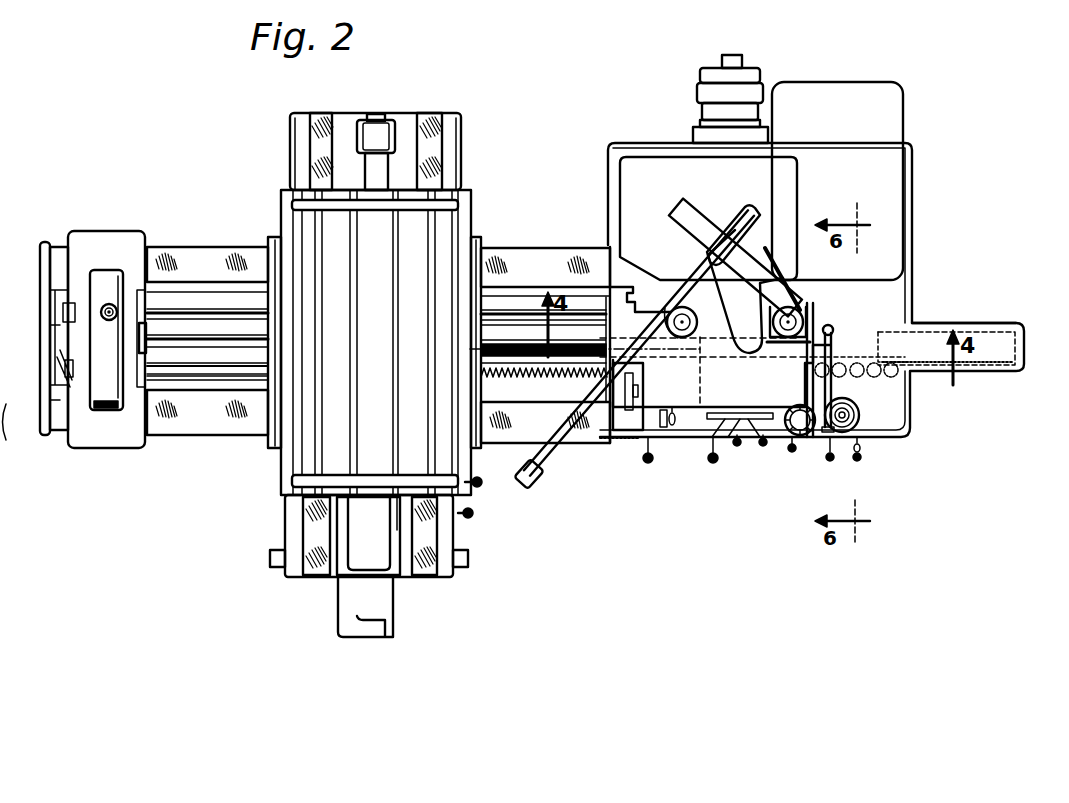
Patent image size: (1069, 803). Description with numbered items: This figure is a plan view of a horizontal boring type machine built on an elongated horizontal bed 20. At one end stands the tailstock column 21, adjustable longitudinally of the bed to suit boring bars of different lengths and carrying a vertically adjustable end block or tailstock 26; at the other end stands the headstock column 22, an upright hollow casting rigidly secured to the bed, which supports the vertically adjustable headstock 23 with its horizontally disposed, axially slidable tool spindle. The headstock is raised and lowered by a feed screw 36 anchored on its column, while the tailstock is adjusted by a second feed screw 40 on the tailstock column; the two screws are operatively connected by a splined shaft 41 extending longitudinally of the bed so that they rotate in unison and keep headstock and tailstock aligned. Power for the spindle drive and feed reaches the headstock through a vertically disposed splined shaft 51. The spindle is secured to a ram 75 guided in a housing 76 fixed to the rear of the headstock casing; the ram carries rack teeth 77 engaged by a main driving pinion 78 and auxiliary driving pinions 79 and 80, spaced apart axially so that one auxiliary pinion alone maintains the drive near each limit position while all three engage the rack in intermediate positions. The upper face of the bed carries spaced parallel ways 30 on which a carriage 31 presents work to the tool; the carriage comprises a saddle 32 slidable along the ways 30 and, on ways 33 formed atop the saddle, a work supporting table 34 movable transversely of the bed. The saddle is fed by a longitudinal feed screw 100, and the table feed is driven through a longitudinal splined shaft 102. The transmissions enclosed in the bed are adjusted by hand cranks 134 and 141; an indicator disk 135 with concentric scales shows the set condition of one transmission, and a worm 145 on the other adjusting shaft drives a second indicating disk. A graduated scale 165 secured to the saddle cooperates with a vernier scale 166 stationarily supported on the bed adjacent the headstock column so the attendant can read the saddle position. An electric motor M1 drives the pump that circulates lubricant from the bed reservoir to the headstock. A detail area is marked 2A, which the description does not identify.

The bed 20 is at (908, 420).
The tailstock column 21 is at (128, 237).
The headstock column 22 is at (612, 179).
The headstock 23 is at (822, 309).
The tailstock 26 is at (152, 327).
The ways 30 is at (207, 252).
The carriage 31 is at (274, 164).
The saddle 32 is at (276, 534).
The ways 33 is at (323, 117).
The work supporting table 34 is at (281, 212).
The feed screw 36 is at (677, 332).
The feed screw 40 is at (109, 304).
The shaft 41 is at (250, 312).
The splined shaft 51 is at (797, 308).
The ram 75 is at (978, 335).
The housing 76 is at (955, 328).
The rack teeth 77 is at (992, 368).
The main driving pinion 78 is at (862, 385).
The auxiliary driving pinion 79 is at (912, 378).
The auxiliary driving pinion 80 is at (803, 380).
The feed screw 100 is at (525, 379).
The splined shaft 102 is at (585, 349).
The detail area 2A is at (688, 364).
The hand crank 134 is at (860, 463).
The indicator disk 135 is at (857, 426).
The hand crank 141 is at (792, 453).
The worm 145 is at (806, 440).
The graduated scale 165 is at (613, 440).
The vernier scale 166 is at (633, 443).
The electric motor M1 is at (706, 90).